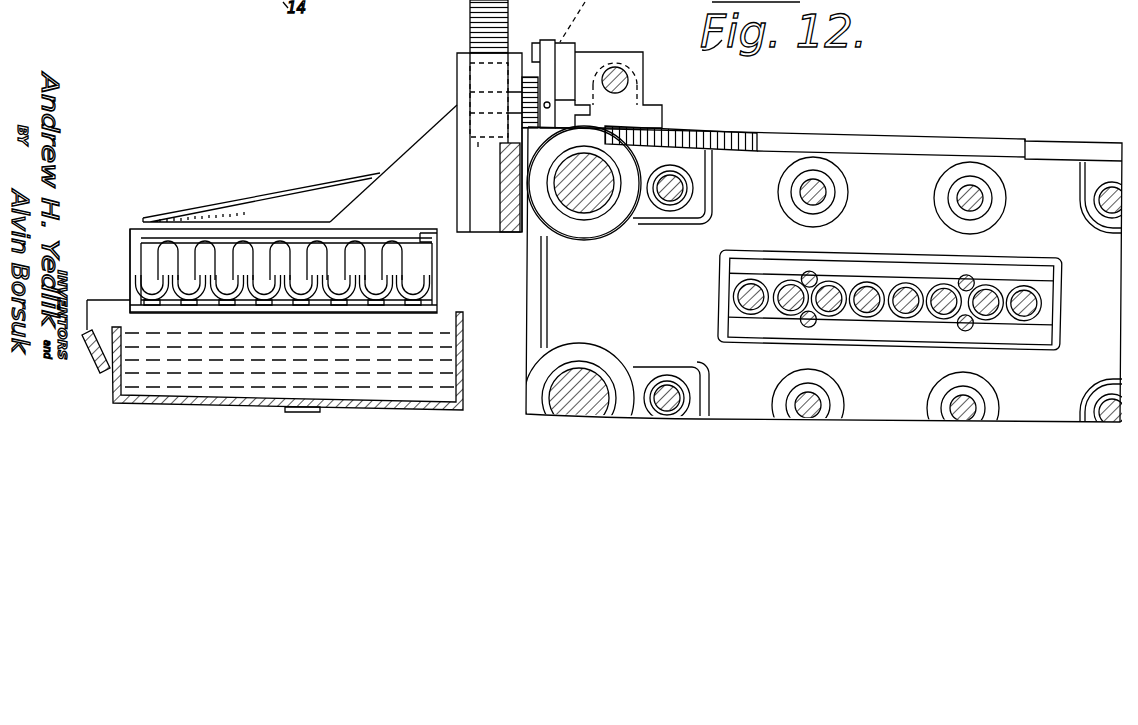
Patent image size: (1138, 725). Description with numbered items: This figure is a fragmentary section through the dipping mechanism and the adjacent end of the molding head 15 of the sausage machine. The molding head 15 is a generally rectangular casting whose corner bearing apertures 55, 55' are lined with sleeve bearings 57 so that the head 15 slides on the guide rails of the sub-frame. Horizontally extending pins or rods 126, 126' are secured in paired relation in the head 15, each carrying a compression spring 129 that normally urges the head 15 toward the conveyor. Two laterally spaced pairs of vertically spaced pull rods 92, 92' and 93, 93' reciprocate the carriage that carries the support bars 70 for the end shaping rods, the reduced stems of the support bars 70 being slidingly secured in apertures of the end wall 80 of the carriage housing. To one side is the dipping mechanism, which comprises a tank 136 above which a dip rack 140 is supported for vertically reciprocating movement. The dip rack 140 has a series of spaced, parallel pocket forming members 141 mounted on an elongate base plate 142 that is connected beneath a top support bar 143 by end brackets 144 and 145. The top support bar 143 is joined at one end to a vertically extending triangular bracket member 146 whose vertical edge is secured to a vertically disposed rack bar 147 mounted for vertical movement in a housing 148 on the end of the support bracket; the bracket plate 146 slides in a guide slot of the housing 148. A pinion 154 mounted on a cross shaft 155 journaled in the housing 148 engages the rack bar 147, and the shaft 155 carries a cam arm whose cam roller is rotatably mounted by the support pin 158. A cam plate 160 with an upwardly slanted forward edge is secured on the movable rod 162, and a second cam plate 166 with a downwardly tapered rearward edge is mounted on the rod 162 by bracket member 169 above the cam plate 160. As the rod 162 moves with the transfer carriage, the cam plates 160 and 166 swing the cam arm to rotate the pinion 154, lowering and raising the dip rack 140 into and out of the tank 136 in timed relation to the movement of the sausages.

The molding head 15 is at (848, 130).
The dip rack 140 is at (128, 226).
The end bracket 145 is at (130, 270).
The top support bar 143 is at (253, 236).
The triangular shaped bracket member 146 is at (410, 152).
The pocket forming members 141 is at (427, 295).
The end bracket 144 is at (440, 300).
The base plate 142 is at (238, 311).
The tank 136 is at (455, 347).
The rack bar 147 is at (508, 36).
The housing 148 is at (470, 198).
The cross shaft 155 is at (470, 100).
The pinion 154 is at (478, 142).
The support pin 158 is at (552, 46).
The second cam plate 166 is at (570, 74).
The bracket member 169 is at (608, 57).
The movable bar or rod 162 is at (627, 80).
The cam plate 160 is at (566, 107).
The bearing aperture 55 is at (584, 198).
The sleeve bearing 57 is at (607, 212).
The compression spring 129 is at (695, 190).
The pin or rod 126 is at (665, 210).
The pull rod 92 is at (828, 192).
The pull rod 93 is at (982, 198).
The end wall 80 is at (887, 290).
The support bars 70 is at (998, 286).
The bearing aperture 55' is at (585, 391).
The pin or rod 126' is at (674, 384).
The pull rod 92' is at (820, 400).
The pull rod 93' is at (971, 402).